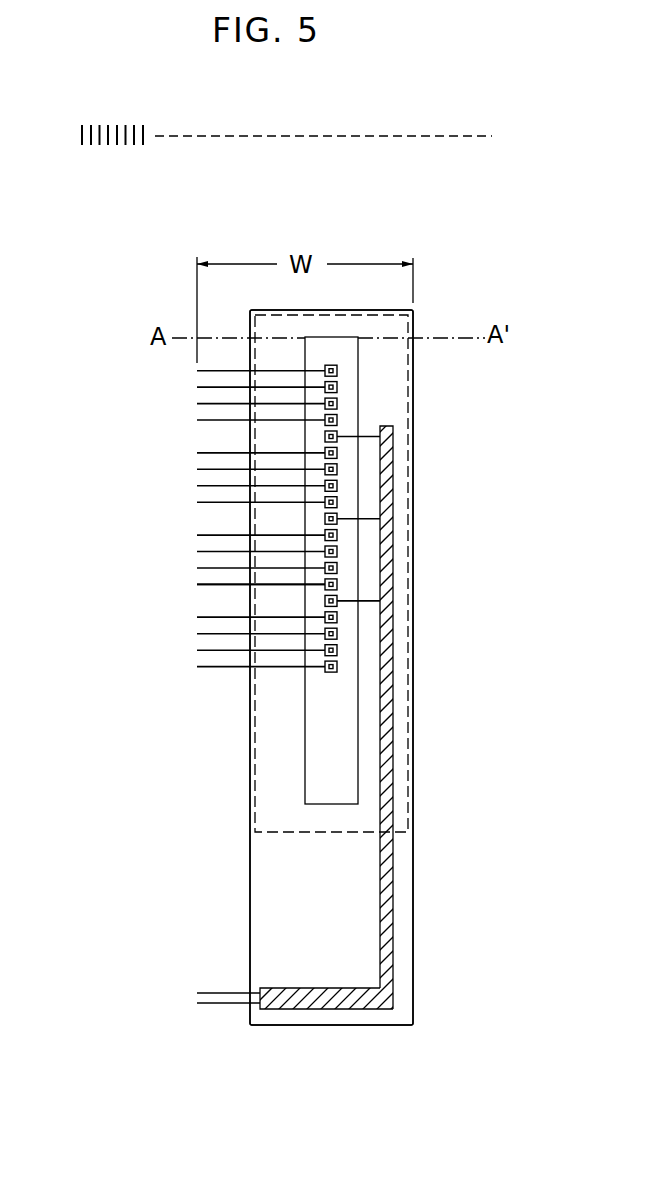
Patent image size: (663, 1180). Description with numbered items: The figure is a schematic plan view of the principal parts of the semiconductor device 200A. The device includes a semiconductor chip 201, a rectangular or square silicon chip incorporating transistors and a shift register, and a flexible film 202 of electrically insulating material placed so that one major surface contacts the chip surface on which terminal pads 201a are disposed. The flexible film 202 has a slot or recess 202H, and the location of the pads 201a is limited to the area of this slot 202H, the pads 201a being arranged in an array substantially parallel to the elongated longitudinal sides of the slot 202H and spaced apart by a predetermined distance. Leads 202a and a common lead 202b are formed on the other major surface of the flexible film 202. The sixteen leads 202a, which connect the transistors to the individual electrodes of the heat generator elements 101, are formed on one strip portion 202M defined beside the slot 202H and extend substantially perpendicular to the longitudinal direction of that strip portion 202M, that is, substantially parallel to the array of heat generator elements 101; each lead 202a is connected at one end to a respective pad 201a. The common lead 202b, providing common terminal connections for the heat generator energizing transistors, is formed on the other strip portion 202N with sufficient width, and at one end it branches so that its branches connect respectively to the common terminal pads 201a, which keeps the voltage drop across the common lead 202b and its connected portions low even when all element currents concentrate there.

The heat generator elements 101 is at (138, 123).
The semiconductor device 200A is at (176, 290).
The semiconductor chip 201 is at (300, 833).
The terminal pads 201a is at (337, 372).
The flexible film 202 is at (413, 877).
The slot or recess 202H is at (342, 353).
The leads 202a is at (181, 666).
The strip portion 202M is at (282, 598).
The strip portion 202N is at (400, 612).
The common lead 202b is at (357, 998).